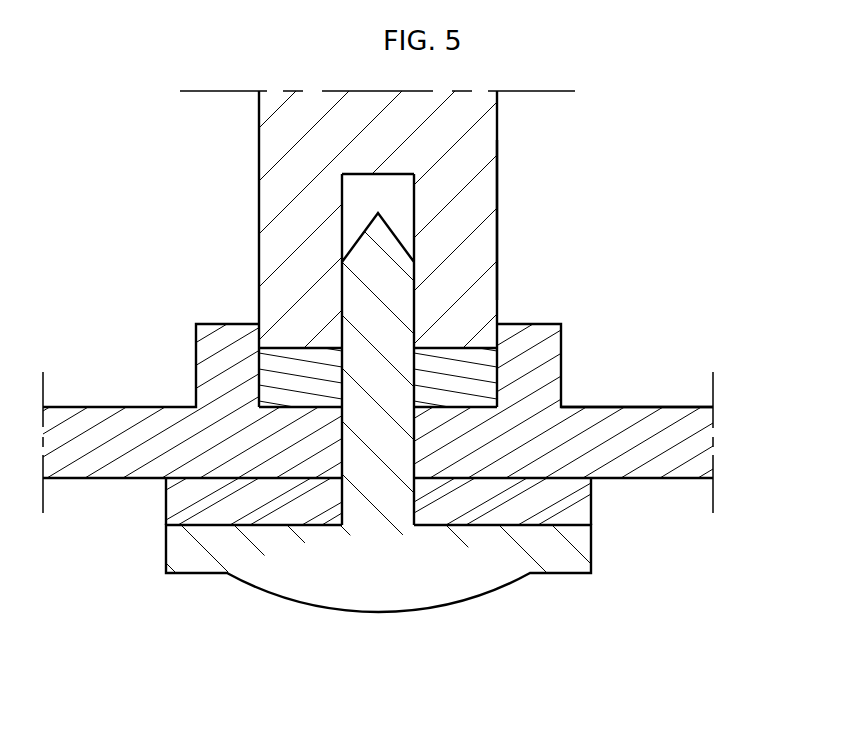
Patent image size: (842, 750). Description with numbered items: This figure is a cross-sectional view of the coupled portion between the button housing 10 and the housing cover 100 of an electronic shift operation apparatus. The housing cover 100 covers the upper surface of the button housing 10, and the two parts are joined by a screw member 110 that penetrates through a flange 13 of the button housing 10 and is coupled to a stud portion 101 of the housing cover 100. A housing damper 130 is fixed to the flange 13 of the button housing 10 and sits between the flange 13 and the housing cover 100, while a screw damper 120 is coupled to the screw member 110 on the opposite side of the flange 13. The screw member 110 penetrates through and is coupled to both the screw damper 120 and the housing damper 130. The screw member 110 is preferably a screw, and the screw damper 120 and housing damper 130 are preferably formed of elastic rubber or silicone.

The housing cover 100 is at (245, 180).
The stud portion 101 is at (480, 193).
The button housing 10 is at (107, 494).
The flange 13 is at (635, 422).
The housing damper 130 is at (299, 362).
The screw damper 120 is at (288, 500).
The screw member 110 is at (385, 592).